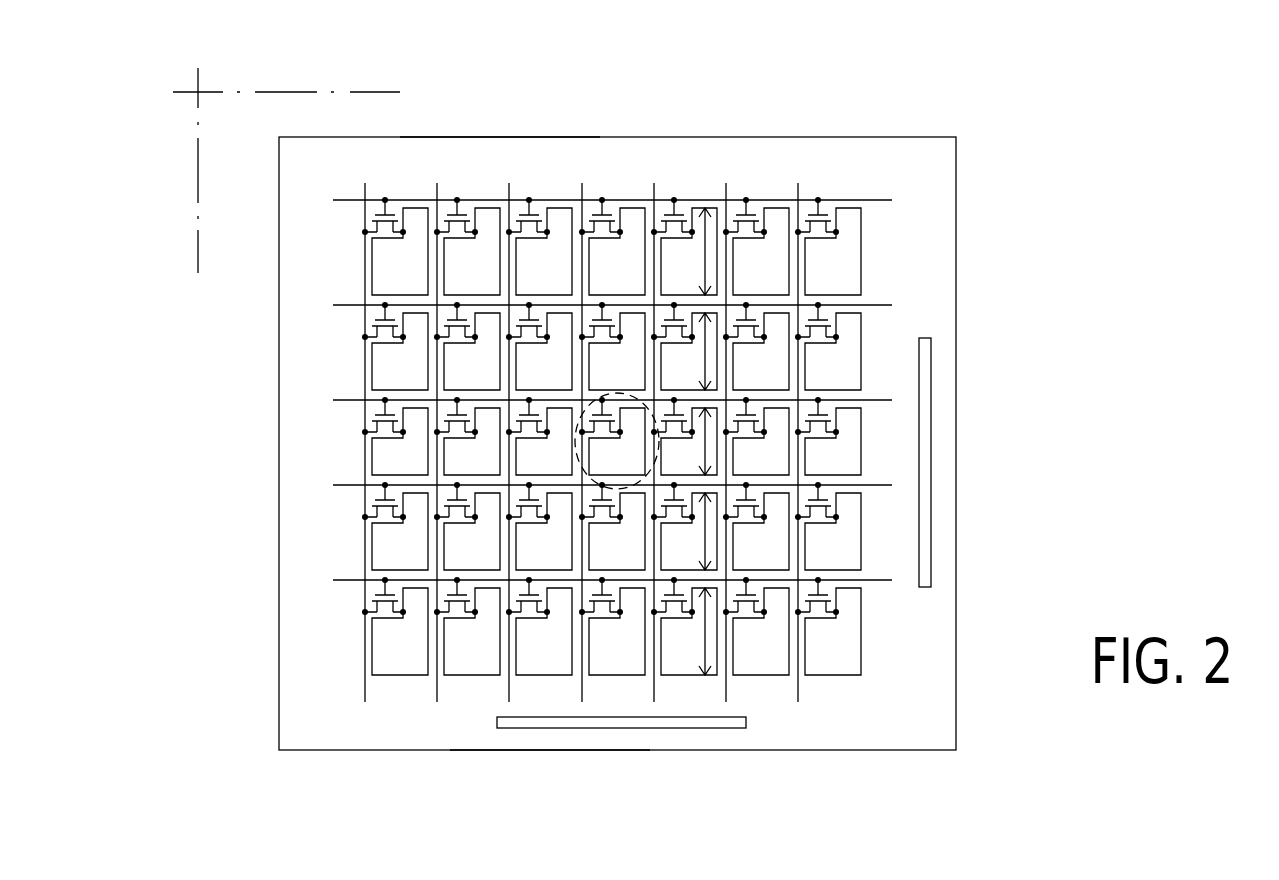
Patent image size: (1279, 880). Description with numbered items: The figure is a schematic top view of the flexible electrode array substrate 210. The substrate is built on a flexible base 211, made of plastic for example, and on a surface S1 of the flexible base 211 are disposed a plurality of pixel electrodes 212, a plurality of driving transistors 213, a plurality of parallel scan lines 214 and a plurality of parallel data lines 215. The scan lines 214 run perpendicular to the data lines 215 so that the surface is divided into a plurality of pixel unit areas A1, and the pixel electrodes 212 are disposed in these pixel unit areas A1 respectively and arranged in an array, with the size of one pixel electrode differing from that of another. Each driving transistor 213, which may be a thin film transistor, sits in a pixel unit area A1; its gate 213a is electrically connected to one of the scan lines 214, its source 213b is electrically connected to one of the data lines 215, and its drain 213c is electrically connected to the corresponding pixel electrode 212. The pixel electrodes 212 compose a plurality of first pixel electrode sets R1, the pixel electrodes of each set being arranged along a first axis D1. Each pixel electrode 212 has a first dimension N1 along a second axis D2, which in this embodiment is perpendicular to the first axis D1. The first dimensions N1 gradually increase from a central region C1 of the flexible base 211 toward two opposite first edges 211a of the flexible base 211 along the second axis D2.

The flexible electrode array substrate 210 is at (1034, 753).
The flexible base 211 is at (940, 232).
The first edge 211a is at (513, 125).
The pixel electrode 212 is at (852, 230).
The driving transistor 213 is at (627, 336).
The gate 213a is at (822, 210).
The source 213b is at (807, 228).
The drain 213c is at (836, 230).
The scan line 214 is at (623, 198).
The data line 215 is at (800, 686).
The pixel unit area A1 is at (637, 426).
The surface S1 is at (926, 328).
The central region C1 is at (583, 398).
The first dimension N1 is at (707, 253).
The first pixel electrode set R1 is at (592, 160).
The first axis D1 is at (383, 92).
The second axis D2 is at (198, 250).